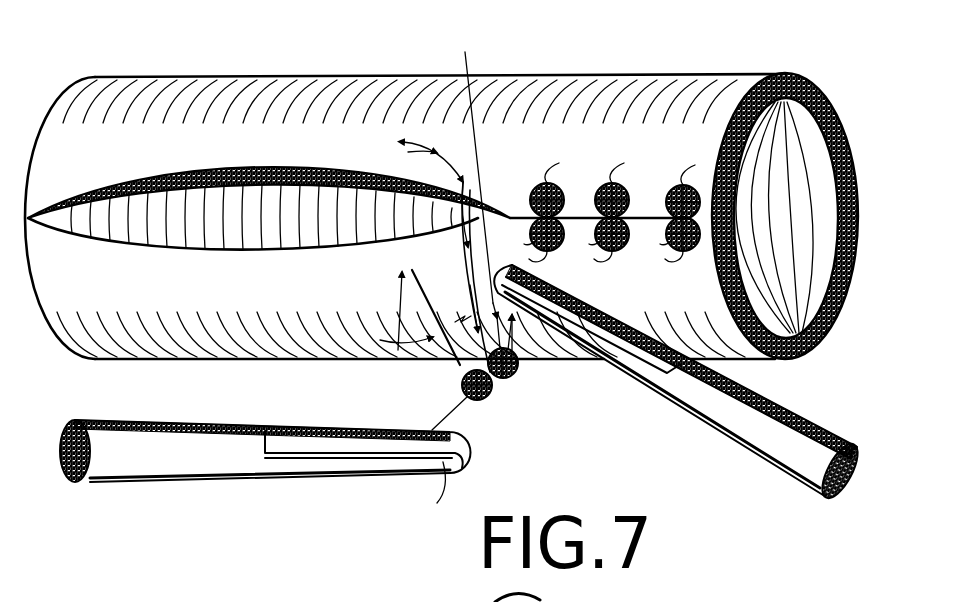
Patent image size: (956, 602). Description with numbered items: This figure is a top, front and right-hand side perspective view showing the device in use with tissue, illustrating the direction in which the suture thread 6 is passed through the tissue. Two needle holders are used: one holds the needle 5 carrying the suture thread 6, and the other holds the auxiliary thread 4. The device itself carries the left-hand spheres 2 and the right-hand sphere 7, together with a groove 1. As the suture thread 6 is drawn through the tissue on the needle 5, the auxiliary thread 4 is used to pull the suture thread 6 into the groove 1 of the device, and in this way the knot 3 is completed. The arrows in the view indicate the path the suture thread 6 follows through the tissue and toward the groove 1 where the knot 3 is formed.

The groove 1 is at (500, 384).
The left-hand spheres 2 is at (490, 399).
The knot 3 is at (487, 403).
The auxiliary thread 4 is at (525, 252).
The needle 5 is at (438, 189).
The suture thread 6 is at (417, 155).
The right-hand sphere 7 is at (606, 185).